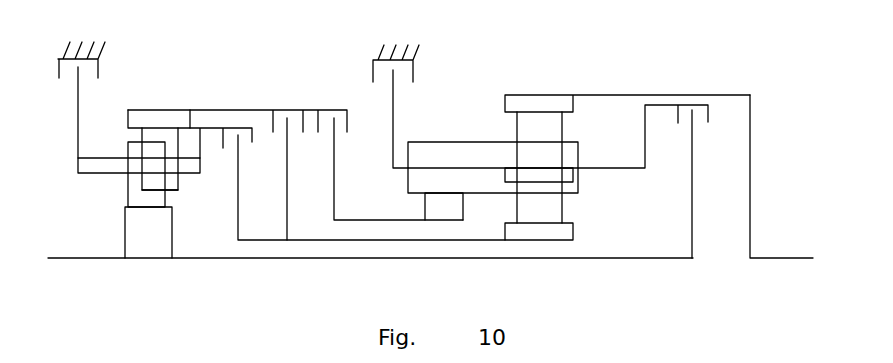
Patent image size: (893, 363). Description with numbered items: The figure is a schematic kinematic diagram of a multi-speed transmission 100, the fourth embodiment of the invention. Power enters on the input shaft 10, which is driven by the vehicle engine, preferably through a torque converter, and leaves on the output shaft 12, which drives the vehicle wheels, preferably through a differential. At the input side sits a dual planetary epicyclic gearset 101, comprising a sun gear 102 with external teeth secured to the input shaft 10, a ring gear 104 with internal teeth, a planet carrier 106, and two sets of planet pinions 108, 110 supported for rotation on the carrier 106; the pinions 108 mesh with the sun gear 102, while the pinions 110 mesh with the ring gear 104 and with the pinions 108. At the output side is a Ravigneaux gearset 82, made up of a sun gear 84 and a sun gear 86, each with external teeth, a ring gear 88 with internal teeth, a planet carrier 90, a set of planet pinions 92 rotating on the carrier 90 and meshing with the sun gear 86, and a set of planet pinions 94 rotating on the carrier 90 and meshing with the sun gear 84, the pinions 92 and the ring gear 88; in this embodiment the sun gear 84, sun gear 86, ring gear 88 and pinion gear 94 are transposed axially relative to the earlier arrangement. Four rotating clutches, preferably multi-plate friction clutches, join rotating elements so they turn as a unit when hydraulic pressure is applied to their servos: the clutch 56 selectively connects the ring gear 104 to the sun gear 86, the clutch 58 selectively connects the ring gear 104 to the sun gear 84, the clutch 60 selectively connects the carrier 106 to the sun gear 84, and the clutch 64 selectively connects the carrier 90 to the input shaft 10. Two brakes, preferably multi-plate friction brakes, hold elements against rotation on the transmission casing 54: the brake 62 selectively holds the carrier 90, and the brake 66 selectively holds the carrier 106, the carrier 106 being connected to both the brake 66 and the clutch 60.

The input shaft 10 is at (60, 258).
The output shaft 12 is at (782, 258).
The transmission casing 54 is at (100, 55).
The clutch 56 is at (335, 128).
The clutch 58 is at (288, 128).
The clutch 60 is at (240, 142).
The brake 62 is at (395, 80).
The clutch 64 is at (693, 122).
The brake 66 is at (78, 77).
The Ravigneaux gearset 82 is at (610, 149).
The sun gear 84 is at (567, 235).
The sun gear 86 is at (444, 208).
The ring gear 88 is at (513, 106).
The planet carrier 90 is at (588, 170).
The planet pinions 92 is at (493, 156).
The planet pinions 94 is at (563, 210).
The transmission 100 is at (68, 158).
The dual planetary epicyclic gearset 101 is at (101, 142).
The sun gear 102 is at (148, 232).
The ring gear 104 is at (159, 120).
The planet carrier 106 is at (115, 175).
The planet pinions 108 is at (137, 192).
The planet pinions 110 is at (173, 186).